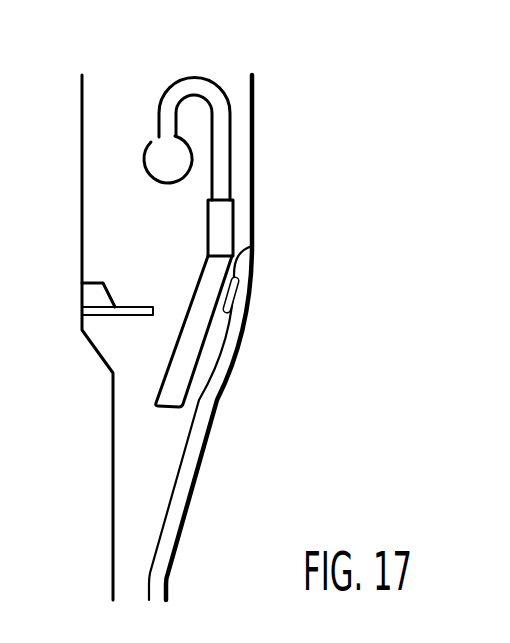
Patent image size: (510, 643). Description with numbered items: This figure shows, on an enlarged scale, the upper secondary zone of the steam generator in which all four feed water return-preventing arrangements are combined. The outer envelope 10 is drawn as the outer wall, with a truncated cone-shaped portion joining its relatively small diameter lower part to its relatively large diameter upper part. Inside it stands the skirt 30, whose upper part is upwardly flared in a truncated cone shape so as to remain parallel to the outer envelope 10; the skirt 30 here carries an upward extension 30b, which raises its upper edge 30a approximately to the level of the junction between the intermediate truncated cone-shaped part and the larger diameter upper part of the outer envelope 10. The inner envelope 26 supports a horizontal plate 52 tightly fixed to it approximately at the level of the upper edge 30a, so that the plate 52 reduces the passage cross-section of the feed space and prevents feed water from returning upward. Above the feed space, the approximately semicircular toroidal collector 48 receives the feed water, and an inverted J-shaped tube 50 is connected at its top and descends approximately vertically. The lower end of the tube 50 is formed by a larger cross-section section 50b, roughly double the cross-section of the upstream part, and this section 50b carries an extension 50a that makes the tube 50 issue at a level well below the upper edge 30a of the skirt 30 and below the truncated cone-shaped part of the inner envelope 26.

The outer envelope 10 is at (201, 460).
The inner envelope 26 is at (113, 460).
The skirt 30 is at (163, 530).
The upper edge of skirt 30a is at (248, 256).
The upward extension of skirt 30b is at (238, 298).
The toroidal collector 48 is at (151, 141).
The inverted J-shaped tube 50 is at (230, 144).
The extension of tube 50a is at (196, 362).
The larger diameter bent tubular section 50b is at (232, 226).
The horizontal plate 52 is at (132, 307).